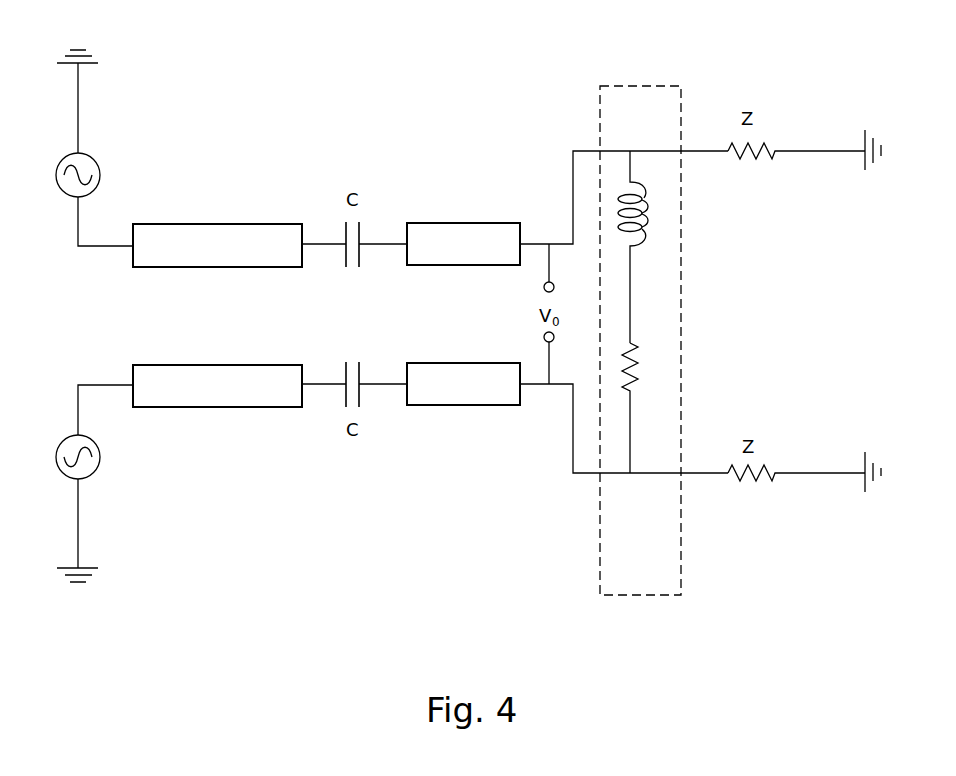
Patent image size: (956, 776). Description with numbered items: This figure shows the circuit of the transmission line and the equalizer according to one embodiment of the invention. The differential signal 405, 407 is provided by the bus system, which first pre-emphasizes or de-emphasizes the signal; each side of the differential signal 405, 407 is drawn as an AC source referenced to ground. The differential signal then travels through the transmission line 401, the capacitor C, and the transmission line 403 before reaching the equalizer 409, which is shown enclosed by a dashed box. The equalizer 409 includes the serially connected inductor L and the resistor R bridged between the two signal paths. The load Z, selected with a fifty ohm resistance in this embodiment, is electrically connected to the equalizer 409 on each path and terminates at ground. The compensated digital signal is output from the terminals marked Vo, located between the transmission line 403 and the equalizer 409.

The transmission line 401 is at (210, 224).
The transmission line 403 is at (457, 223).
The differential signal 405 is at (97, 165).
The differential signal 407 is at (97, 470).
The equalizer 409 is at (640, 340).